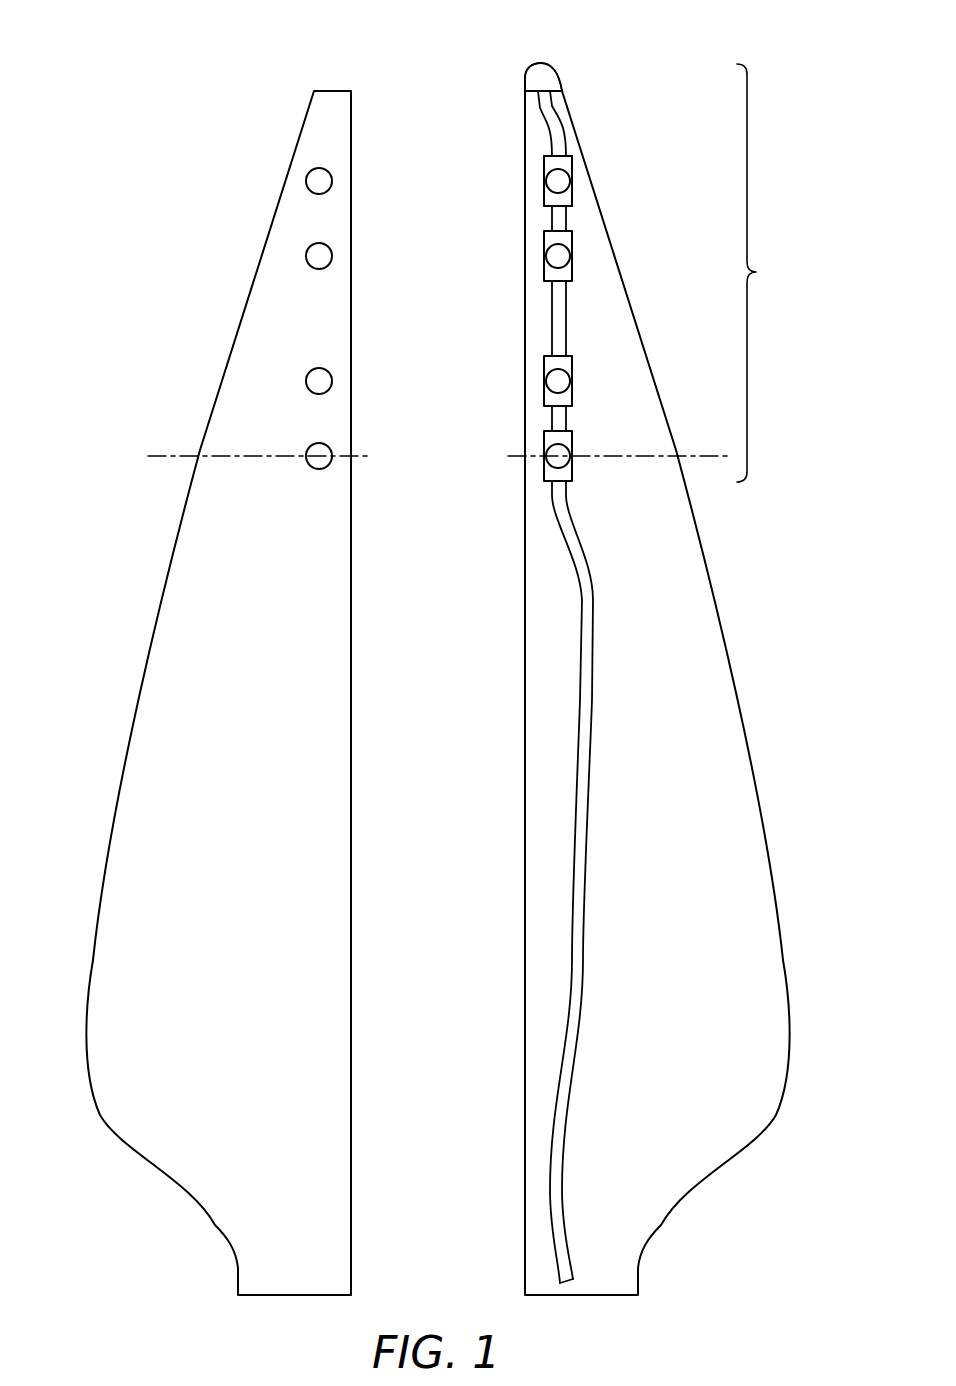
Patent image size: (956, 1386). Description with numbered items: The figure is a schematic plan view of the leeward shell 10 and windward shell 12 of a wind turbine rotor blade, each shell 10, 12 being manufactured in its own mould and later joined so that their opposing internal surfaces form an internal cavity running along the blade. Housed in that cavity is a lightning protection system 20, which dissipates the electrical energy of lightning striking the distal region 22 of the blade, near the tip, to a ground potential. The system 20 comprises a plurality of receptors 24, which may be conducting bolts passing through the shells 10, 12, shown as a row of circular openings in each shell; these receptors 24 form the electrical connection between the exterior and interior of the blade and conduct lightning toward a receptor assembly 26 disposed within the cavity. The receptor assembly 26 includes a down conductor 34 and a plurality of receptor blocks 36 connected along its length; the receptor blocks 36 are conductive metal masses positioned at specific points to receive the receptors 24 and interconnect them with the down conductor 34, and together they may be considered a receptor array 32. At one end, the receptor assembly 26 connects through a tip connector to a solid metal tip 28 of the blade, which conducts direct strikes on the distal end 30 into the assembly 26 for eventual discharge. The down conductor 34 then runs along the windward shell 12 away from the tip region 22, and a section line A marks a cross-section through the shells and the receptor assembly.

The leeward shell 10 is at (162, 527).
The windward shell 12 is at (718, 527).
The lightning protection system 20 is at (595, 303).
The distal region 22 is at (763, 273).
The receptors 24 is at (324, 186).
The receptor assembly 26 is at (586, 198).
The solid metal tip 28 is at (553, 72).
The distal end 30 is at (540, 54).
The receptor array 32 is at (558, 181).
The down conductor 34 is at (545, 122).
The receptor blocks 36 is at (544, 270).
The section line A- A is at (159, 448).